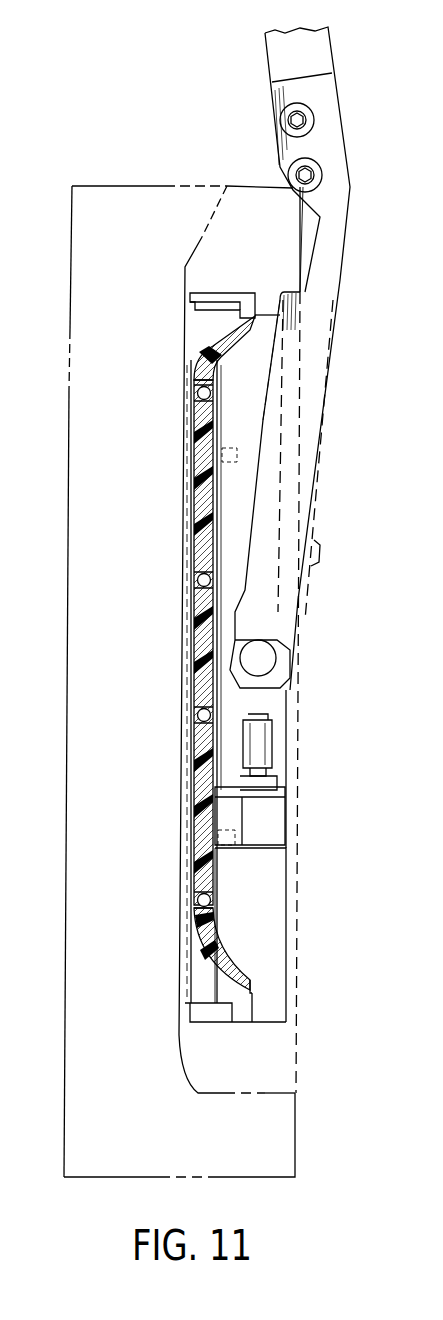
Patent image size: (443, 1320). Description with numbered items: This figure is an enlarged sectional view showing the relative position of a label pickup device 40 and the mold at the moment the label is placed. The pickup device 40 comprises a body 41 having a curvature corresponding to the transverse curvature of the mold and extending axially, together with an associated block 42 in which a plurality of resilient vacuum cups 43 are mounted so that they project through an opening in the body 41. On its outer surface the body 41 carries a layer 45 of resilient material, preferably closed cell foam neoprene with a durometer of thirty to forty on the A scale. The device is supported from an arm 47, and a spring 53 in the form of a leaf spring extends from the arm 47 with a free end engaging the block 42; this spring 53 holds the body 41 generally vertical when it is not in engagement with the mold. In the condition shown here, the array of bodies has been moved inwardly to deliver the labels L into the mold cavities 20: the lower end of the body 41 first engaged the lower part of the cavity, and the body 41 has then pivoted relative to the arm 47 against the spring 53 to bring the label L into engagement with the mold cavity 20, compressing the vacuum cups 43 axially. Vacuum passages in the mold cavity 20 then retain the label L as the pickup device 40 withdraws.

The mold cavity 20 is at (130, 786).
The pickup device 40 is at (203, 457).
The body 41 is at (260, 893).
The block 42 is at (267, 823).
The vacuum cup 43 is at (192, 724).
The layer of resilient material 45 is at (210, 927).
The arm 47 is at (332, 237).
The spring 53 is at (287, 725).
The label L is at (200, 352).